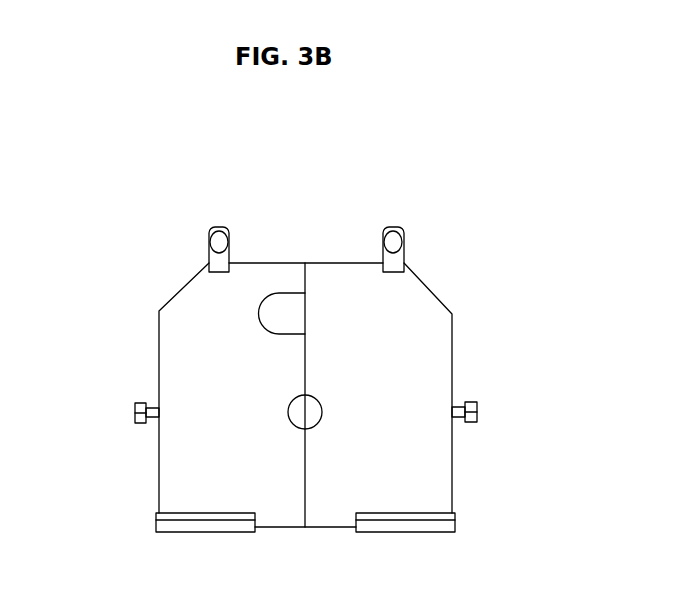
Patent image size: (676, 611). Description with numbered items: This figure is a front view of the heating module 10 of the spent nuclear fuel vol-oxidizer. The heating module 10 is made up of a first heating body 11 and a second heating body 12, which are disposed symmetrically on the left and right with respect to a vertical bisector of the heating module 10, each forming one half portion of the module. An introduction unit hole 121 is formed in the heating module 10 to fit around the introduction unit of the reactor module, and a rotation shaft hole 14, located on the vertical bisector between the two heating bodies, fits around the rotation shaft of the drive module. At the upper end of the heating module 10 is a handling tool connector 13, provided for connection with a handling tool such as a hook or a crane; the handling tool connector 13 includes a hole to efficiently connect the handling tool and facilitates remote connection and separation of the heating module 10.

The heating module 10 is at (160, 252).
The first heating body 11 is at (447, 350).
The second heating body 12 is at (165, 348).
The introduction unit hole 121 is at (279, 316).
The handling tool connector 13 is at (215, 227).
The rotation shaft hole 14 is at (304, 403).